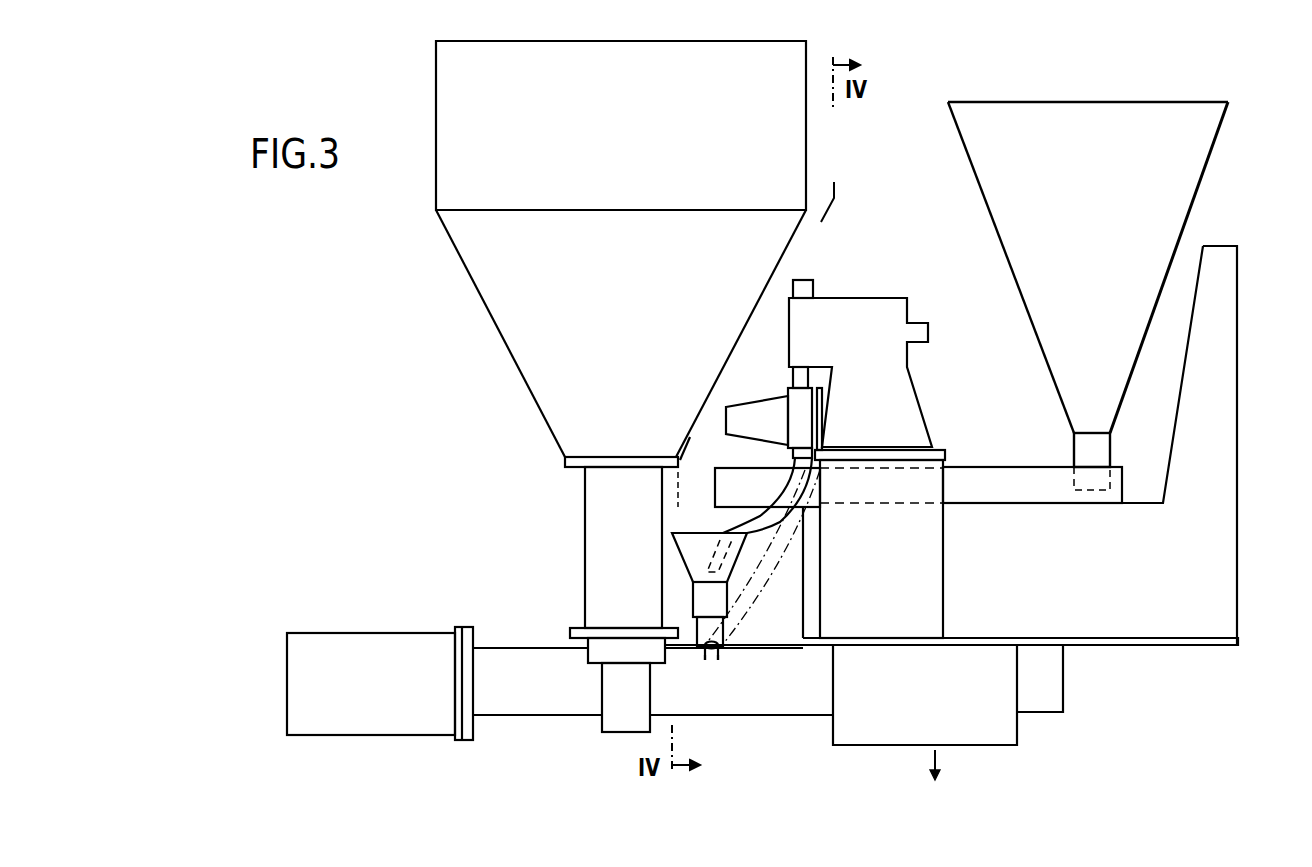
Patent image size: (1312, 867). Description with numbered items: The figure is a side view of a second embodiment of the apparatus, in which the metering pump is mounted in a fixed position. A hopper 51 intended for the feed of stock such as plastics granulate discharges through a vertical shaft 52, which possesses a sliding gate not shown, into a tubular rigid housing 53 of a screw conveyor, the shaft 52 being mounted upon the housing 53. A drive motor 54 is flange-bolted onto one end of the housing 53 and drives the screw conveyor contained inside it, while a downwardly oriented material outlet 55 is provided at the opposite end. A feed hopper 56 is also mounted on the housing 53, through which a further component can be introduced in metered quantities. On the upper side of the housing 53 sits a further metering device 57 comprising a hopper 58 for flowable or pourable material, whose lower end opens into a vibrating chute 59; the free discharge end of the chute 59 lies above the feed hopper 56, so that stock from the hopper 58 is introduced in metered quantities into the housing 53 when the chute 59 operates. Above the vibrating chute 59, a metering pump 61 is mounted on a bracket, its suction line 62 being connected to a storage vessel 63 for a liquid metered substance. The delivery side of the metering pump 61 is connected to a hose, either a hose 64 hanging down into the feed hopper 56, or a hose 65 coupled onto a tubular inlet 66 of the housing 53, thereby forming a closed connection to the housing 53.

The hopper 51 is at (490, 287).
The vertical shaft 52 is at (590, 544).
The tubular rigid housing 53 is at (542, 705).
The drive motor 54 is at (413, 728).
The material outlet 55 is at (840, 728).
The feed hopper 56 is at (690, 532).
The metering device 57 is at (1165, 620).
The hopper 58 is at (1210, 116).
The vibrating chute 59 is at (980, 478).
The metering pump 61 is at (752, 417).
The suction line 62 is at (793, 377).
The storage vessel 63 is at (878, 305).
The hose 64 is at (737, 520).
The hose 65 is at (760, 555).
The tubular inlet 66 is at (715, 662).